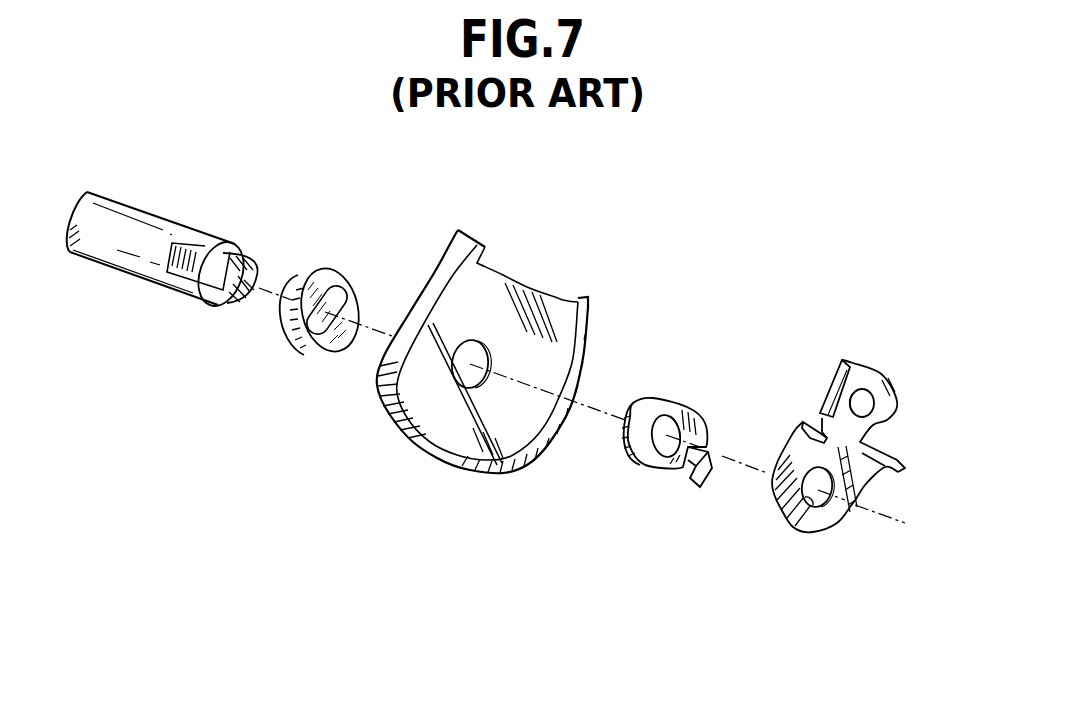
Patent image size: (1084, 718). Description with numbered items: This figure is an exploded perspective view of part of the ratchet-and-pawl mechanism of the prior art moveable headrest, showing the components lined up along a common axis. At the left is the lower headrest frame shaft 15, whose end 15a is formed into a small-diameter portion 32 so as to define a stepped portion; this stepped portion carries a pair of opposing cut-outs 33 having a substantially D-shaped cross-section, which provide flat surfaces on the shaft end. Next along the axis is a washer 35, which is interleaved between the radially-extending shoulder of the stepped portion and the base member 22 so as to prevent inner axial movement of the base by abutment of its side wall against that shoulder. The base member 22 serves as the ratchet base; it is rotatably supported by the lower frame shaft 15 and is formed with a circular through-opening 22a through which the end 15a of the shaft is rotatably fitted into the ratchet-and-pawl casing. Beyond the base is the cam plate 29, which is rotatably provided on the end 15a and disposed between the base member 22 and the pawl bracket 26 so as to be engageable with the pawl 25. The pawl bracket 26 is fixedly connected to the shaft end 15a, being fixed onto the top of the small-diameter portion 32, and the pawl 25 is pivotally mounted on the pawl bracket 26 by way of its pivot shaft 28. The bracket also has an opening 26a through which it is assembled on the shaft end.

The lower headrest frame shaft 15 is at (118, 258).
The end of the lower frame shaft 15a is at (240, 240).
The small-diameter portion 32 is at (232, 307).
The cut-outs 33 is at (262, 268).
The washer 35 is at (344, 272).
The base member 22 is at (457, 440).
The circular through-opening 22a is at (488, 348).
The cam plate 29 is at (662, 463).
The pawl bracket 26 is at (832, 517).
The hole in bracket 26a is at (814, 487).
The pivot shaft 28 is at (866, 400).
The pawl 25 is at (829, 393).